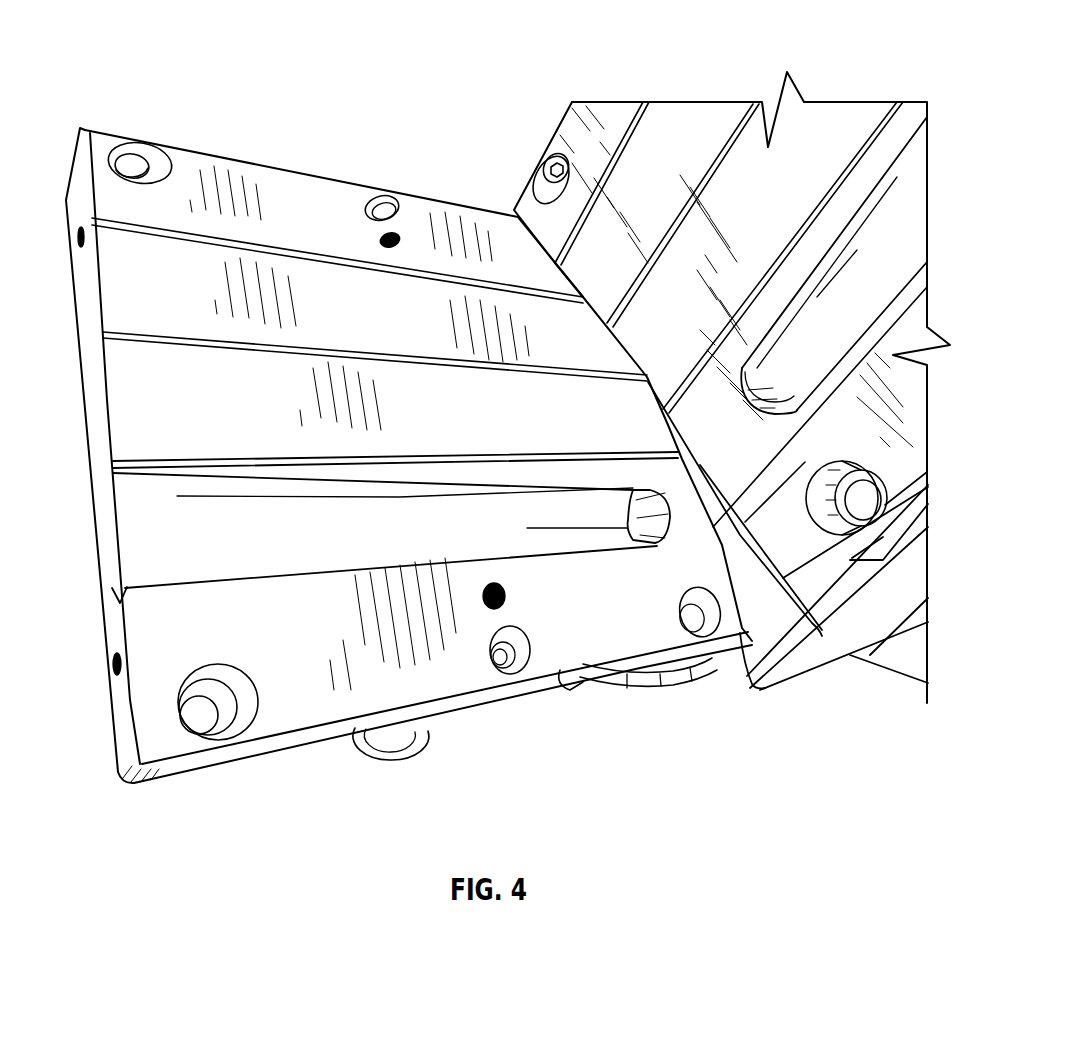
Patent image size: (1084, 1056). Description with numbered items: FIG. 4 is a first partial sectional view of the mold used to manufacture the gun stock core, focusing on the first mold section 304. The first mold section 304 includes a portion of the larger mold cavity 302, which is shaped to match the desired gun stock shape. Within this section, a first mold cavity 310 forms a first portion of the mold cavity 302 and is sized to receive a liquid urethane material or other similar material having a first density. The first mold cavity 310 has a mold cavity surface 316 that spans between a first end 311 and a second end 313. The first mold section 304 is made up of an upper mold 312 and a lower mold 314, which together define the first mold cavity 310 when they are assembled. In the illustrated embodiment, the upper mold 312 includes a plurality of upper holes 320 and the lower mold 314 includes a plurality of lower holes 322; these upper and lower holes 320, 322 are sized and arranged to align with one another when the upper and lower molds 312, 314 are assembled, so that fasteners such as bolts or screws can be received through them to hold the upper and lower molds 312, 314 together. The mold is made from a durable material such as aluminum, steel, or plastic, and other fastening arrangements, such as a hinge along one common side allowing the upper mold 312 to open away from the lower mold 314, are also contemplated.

The first mold section 304 is at (249, 70).
The mold cavity 302 is at (800, 377).
The first mold cavity 310 is at (912, 220).
The first end 311 is at (124, 588).
The upper mold 312 is at (742, 668).
The second end 313 is at (657, 537).
The lower mold 314 is at (125, 758).
The mold cavity surface 316 is at (124, 494).
The upper holes 320 is at (545, 158).
The lower holes 322 is at (136, 170).